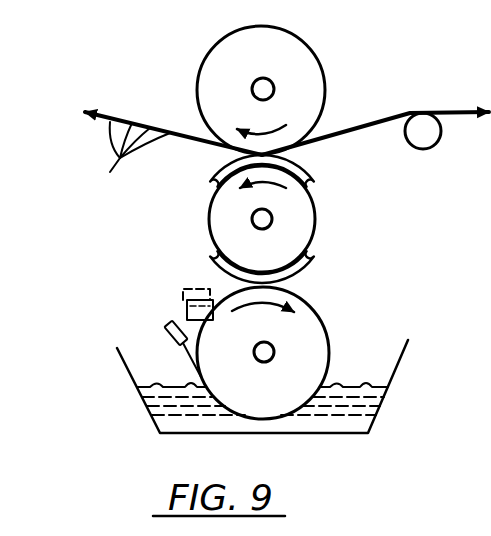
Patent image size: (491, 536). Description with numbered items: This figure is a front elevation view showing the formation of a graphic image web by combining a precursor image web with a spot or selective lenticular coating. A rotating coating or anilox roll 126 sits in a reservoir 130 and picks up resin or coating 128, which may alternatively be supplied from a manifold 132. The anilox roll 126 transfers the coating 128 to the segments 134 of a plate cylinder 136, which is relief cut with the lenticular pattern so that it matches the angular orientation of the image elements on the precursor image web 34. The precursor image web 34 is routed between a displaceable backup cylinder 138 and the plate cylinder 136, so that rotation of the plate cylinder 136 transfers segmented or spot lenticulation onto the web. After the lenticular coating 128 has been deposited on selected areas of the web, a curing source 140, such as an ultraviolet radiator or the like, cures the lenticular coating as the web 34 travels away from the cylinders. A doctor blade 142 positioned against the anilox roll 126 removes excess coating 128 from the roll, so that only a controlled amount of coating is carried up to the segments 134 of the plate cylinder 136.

The precursor image web 34 is at (398, 112).
The anilox roll 126 is at (322, 316).
The coating 128 is at (347, 407).
The reservoir 130 is at (131, 369).
The manifold 132 is at (180, 302).
The segments 134 is at (312, 170).
The plate cylinder 136 is at (314, 208).
The displaceable backup cylinder 138 is at (298, 37).
The curing source 140 is at (119, 165).
The doctor blade 142 is at (158, 333).